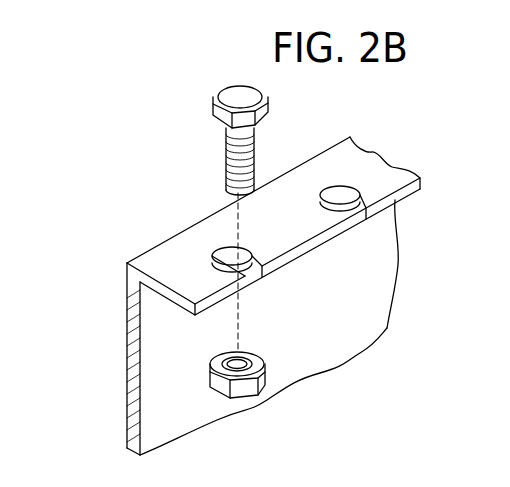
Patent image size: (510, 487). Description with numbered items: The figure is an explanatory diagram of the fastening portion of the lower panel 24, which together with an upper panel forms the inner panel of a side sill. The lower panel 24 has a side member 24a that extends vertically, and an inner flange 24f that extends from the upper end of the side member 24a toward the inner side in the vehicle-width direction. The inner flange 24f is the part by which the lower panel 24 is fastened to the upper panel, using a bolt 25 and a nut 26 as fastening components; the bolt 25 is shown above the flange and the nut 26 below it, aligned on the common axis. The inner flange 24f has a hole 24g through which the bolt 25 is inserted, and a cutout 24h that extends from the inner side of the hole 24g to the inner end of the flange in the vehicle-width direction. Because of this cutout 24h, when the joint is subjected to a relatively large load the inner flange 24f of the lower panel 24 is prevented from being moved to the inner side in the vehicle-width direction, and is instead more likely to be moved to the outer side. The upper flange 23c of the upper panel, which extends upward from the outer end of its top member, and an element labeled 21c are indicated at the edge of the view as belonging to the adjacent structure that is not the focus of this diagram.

The lower panel 24 is at (152, 321).
The side member 24a is at (377, 295).
The inner flange 24f is at (300, 185).
The hole 24g is at (370, 201).
The cutout 24h is at (362, 222).
The bolt 25 is at (220, 152).
The nut 26 is at (272, 380).
The upper flange 23c is at (508, 466).
The member 21c is at (505, 486).